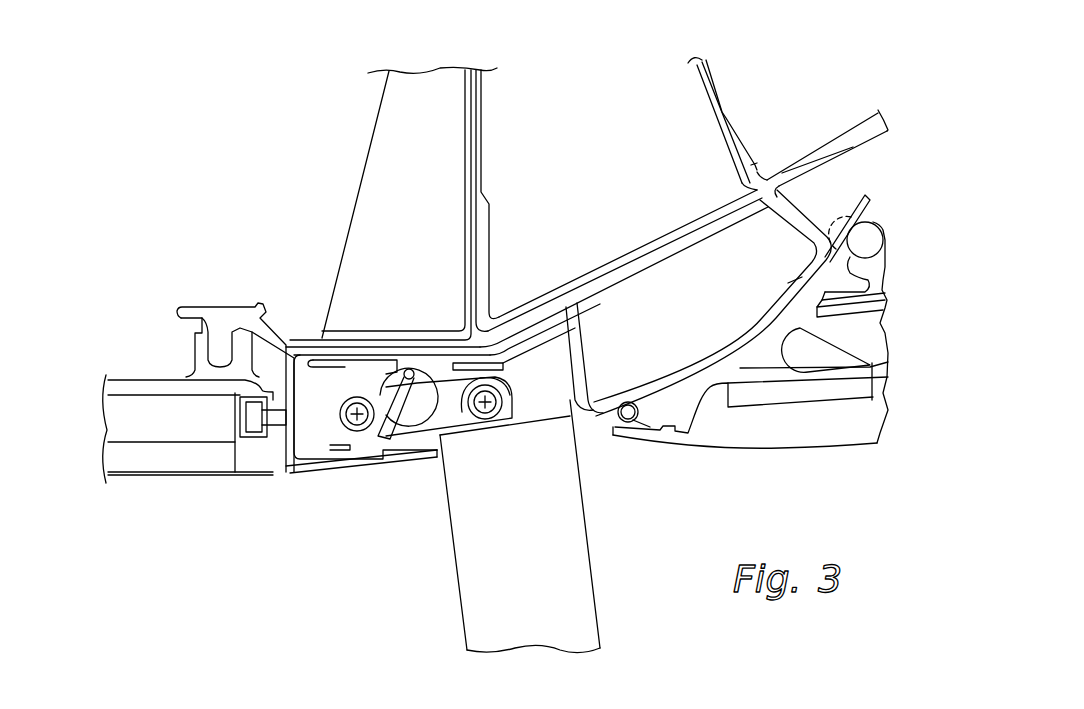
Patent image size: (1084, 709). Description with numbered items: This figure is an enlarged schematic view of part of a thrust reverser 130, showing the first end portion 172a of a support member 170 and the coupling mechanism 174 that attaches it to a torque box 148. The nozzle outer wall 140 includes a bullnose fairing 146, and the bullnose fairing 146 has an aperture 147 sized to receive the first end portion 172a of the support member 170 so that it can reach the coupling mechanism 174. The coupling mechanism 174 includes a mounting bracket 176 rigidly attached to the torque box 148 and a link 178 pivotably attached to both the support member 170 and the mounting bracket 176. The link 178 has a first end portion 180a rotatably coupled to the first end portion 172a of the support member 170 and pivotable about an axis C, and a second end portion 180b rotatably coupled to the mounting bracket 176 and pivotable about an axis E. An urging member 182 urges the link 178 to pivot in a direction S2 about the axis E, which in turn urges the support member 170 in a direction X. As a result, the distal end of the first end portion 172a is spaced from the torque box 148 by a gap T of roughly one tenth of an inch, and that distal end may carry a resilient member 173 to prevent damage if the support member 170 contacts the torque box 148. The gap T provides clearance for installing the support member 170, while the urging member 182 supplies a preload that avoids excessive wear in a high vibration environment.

The thrust reverser 130 is at (756, 68).
The torque box 148 is at (482, 213).
The resilient member 173 is at (497, 326).
The mounting bracket 176 is at (333, 385).
The link 178 is at (427, 380).
The urging member 182 is at (353, 393).
The first end portion of the link 180a is at (507, 390).
The second end portion of the link 180b is at (347, 414).
The bullnose fairing 146 is at (733, 360).
The nozzle outer wall 140 is at (800, 428).
The first end portion of the support member 172a is at (537, 450).
The aperture 147 is at (440, 460).
The coupling mechanism 174 is at (368, 505).
The support member 170 is at (570, 603).
The gap T is at (604, 348).
The axis E is at (355, 416).
The direction S2 is at (388, 453).
The axis C is at (487, 405).
The direction X is at (440, 565).